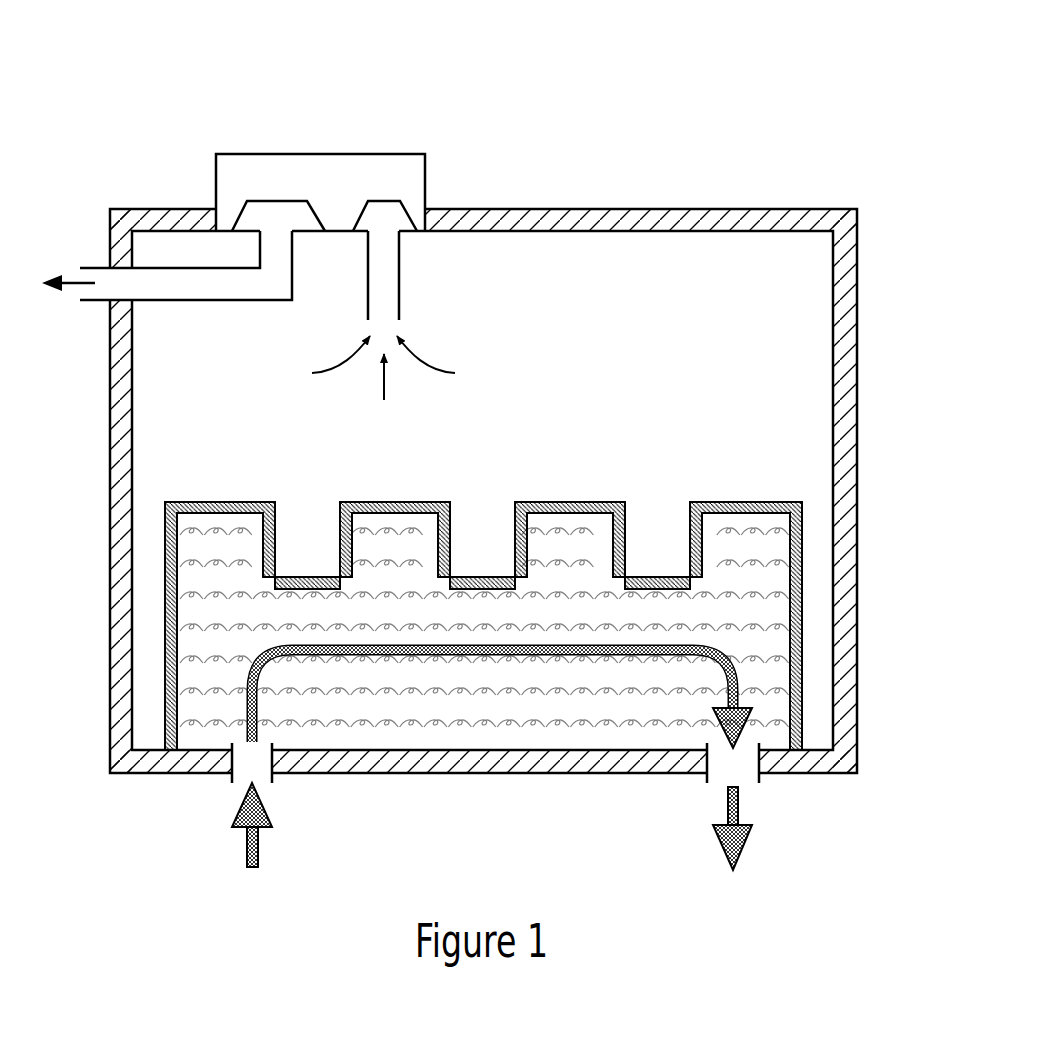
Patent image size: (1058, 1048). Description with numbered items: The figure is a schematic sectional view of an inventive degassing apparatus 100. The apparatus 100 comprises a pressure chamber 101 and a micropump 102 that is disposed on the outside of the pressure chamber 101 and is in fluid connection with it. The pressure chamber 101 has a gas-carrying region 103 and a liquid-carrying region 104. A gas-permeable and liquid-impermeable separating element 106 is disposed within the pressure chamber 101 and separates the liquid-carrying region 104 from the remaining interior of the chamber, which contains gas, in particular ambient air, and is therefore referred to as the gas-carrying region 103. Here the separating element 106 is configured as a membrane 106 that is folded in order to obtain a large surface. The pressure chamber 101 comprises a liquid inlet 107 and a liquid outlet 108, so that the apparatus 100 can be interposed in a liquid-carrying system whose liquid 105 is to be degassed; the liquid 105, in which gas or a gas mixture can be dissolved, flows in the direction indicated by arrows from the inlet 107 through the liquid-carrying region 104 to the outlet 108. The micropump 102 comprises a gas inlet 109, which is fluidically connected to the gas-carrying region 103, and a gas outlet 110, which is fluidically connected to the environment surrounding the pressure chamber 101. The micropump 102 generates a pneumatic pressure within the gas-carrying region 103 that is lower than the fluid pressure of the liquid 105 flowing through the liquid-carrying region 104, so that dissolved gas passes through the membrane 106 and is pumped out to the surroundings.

The apparatus 100 is at (118, 106).
The pressure chamber 101 is at (857, 368).
The micropump 102 is at (318, 154).
The gas-carrying region 103 is at (714, 274).
The liquid-carrying region 104 is at (520, 718).
The liquid 105 is at (741, 526).
The separating element 106 is at (571, 500).
The liquid inlet 107 is at (232, 783).
The liquid outlet 108 is at (759, 777).
The gas inlet 109 is at (400, 283).
The gas outlet 110 is at (193, 300).